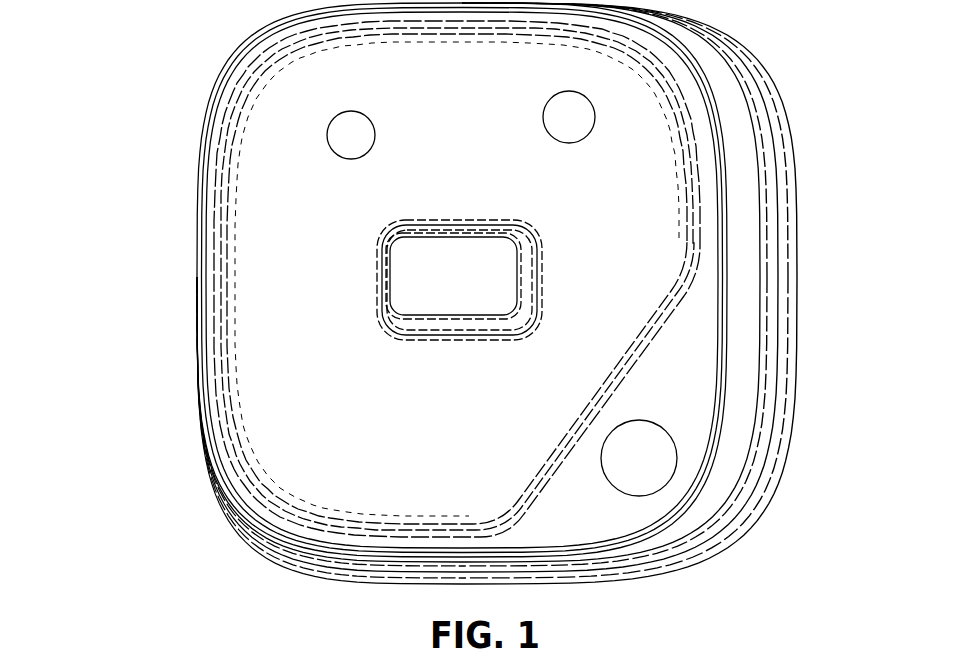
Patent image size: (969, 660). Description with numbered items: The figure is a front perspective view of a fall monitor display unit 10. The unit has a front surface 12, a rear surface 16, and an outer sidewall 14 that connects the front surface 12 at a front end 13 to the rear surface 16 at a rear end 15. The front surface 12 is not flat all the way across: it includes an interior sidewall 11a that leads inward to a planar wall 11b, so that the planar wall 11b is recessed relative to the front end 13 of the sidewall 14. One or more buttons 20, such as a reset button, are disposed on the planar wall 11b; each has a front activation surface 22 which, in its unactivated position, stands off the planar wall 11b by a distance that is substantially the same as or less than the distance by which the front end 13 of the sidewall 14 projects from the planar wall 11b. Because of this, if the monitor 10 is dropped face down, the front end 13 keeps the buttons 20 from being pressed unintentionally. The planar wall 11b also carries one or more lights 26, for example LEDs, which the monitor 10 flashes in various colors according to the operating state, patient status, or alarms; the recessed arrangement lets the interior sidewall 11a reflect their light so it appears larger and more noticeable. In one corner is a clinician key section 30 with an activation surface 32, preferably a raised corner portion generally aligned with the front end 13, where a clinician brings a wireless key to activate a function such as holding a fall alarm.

The fall monitor display unit 10 is at (232, 48).
The interior sidewall 11a is at (217, 223).
The planar wall 11b is at (337, 176).
The front surface 12 is at (258, 334).
The front end 13 is at (715, 110).
The outer sidewall 14 is at (750, 230).
The rear end 15 is at (783, 143).
The rear surface 16 is at (788, 454).
The buttons 20 is at (500, 288).
The front activation surface 22 is at (453, 276).
The lights 26 is at (368, 137).
The clinician key section 30 is at (653, 502).
The activation surface 32 is at (665, 460).